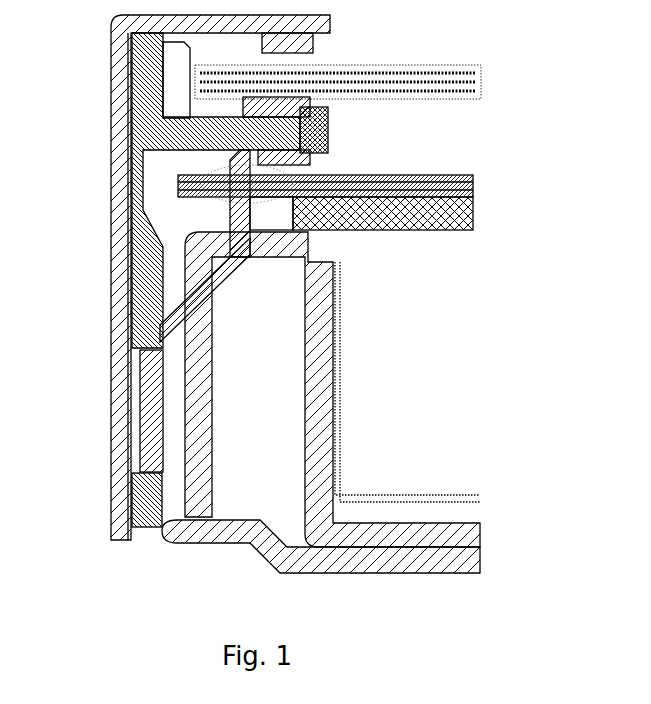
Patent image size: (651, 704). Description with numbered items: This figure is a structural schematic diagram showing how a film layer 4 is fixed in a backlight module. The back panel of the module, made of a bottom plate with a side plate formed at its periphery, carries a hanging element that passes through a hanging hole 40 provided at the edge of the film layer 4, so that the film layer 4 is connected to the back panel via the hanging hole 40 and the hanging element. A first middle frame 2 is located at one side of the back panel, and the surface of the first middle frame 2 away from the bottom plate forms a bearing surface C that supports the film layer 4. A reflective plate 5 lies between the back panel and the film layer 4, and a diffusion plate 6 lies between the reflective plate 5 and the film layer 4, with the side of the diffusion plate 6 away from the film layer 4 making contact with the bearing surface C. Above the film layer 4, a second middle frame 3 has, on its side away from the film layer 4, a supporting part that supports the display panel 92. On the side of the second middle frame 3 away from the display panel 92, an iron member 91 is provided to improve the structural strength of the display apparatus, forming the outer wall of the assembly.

The iron member 91 is at (122, 63).
The display panel 92 is at (423, 63).
The second middle frame 3 is at (152, 137).
The hanging hole 40 is at (287, 172).
The film layer 4 is at (423, 190).
The diffusion plate 6 is at (432, 212).
The first middle frame 2 is at (193, 492).
The reflective plate 5 is at (412, 498).
The bearing surface C is at (312, 232).